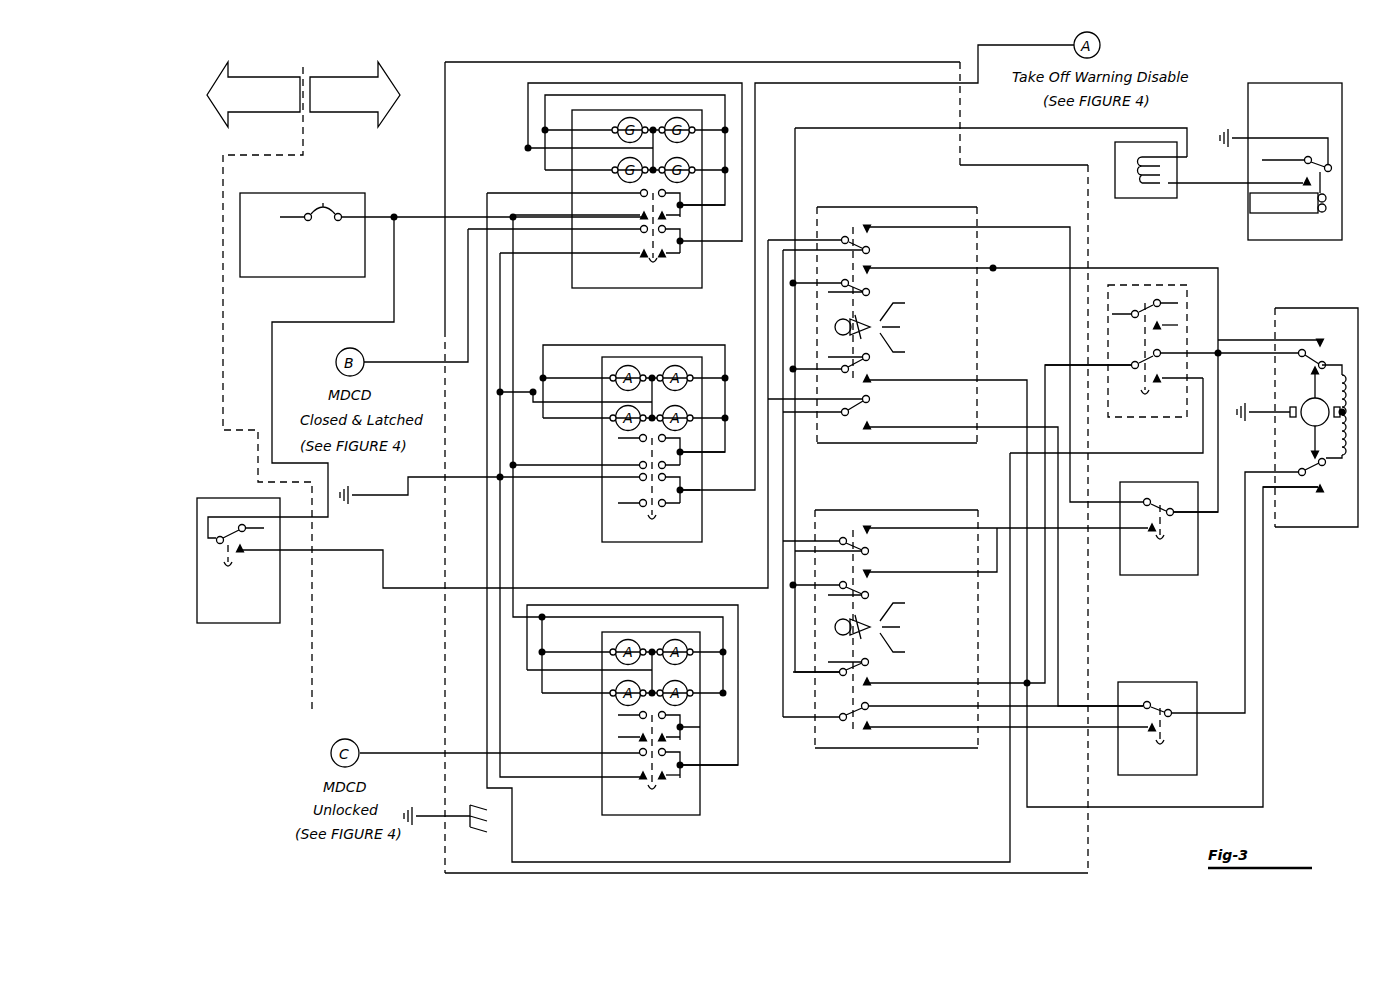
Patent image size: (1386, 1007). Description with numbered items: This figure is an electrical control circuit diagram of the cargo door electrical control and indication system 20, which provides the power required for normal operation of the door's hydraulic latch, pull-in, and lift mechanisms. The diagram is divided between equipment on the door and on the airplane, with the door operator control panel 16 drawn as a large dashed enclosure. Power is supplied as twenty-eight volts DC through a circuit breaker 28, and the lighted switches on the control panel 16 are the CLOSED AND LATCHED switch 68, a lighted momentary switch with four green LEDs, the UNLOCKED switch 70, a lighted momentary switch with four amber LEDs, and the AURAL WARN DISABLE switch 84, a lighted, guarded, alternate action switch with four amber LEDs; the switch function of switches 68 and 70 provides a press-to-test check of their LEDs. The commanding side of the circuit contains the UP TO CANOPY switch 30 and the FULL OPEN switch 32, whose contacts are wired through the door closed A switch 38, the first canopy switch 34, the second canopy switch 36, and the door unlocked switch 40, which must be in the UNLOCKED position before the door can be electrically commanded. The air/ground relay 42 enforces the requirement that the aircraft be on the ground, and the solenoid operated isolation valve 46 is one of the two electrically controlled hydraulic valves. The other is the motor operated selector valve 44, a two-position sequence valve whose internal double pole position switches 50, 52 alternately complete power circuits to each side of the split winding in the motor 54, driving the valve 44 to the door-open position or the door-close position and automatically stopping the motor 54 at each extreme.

The door operator control panel 16 is at (706, 61).
The electrical control and indication system 20 is at (418, 70).
The circuit breaker 28 is at (340, 193).
The UP TO CANOPY switch 30 is at (884, 207).
The FULL OPEN switch 32 is at (938, 510).
The first canopy switch 34 is at (1197, 697).
The second canopy switch 36 is at (1198, 565).
The door closed A switch 38 is at (1108, 340).
The door unlocked switch 40 is at (225, 498).
The air/ground relay 42 is at (1248, 95).
The motor operated selector valve 44 is at (1296, 429).
The solenoid operated isolation valve 46 is at (1115, 160).
The position switch 50 is at (1345, 318).
The position switch 52 is at (1352, 527).
The motor 54 is at (1302, 428).
The CLOSED AND LATCHED switch 68 is at (580, 108).
The UNLOCKED switch 70 is at (700, 792).
The AURAL WARN DISABLE switch 84 is at (702, 515).